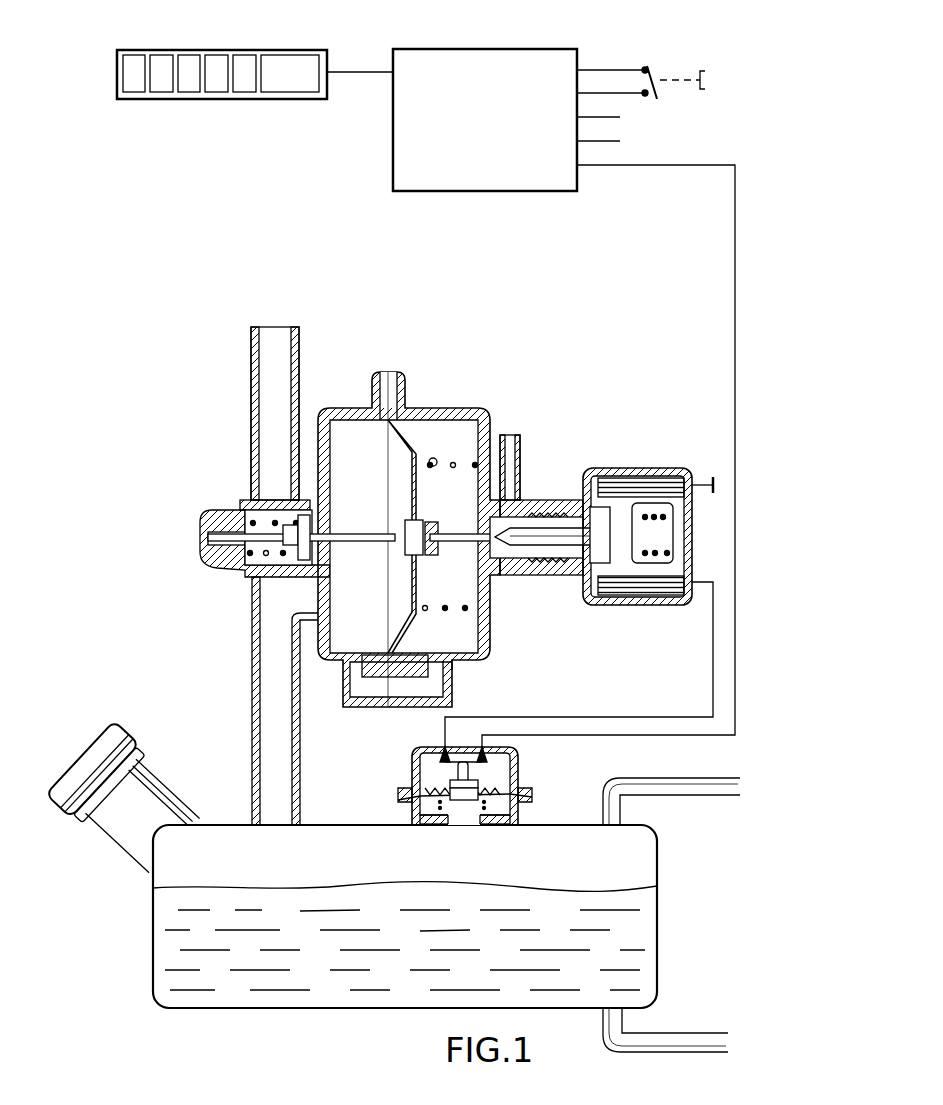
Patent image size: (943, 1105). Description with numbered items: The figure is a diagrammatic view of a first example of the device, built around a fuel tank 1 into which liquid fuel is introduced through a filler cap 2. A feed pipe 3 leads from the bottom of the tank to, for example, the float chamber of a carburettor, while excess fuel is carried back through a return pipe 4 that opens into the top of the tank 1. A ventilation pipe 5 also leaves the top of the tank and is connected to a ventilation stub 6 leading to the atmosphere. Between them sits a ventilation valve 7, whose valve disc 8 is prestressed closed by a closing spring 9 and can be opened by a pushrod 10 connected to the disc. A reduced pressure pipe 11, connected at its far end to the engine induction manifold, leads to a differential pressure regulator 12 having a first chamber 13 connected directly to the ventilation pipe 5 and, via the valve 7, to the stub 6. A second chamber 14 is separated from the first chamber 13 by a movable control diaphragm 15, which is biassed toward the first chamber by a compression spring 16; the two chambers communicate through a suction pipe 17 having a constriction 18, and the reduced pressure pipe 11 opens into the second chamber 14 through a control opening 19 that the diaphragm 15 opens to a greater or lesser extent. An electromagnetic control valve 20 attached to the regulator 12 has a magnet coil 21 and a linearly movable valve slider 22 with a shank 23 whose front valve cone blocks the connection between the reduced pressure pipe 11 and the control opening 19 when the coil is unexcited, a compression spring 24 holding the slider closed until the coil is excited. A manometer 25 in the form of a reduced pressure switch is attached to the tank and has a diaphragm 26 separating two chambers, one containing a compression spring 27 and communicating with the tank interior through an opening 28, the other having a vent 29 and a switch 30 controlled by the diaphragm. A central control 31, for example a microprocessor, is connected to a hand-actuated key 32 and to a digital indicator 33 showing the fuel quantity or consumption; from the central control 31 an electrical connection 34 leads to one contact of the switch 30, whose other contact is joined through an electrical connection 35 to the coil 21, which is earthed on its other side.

The fuel tank 1 is at (165, 945).
The filler cap 2 is at (117, 840).
The feed pipe 3 is at (690, 1040).
The return pipe 4 is at (688, 790).
The ventilation pipe 5 is at (270, 720).
The ventilation stub 6 is at (268, 352).
The ventilation valve 7 is at (190, 512).
The valve disc 8 is at (290, 526).
The closing spring 9 is at (270, 515).
The pushrod 10 is at (372, 535).
The reduced pressure pipe 11 is at (517, 437).
The differential pressure regulator 12 is at (452, 382).
The first chamber 13 is at (366, 445).
The second chamber 14 is at (452, 437).
The control diaphragm 15 is at (404, 430).
The compression spring 16 is at (436, 460).
The suction pipe 17 is at (355, 677).
The constriction 18 is at (465, 668).
The control opening 19 is at (497, 568).
The electromagnetic control valve 20 is at (640, 460).
The magnet coil 21 is at (640, 582).
The valve slider 22 is at (620, 478).
The shank 23 is at (540, 537).
The compression spring 24 is at (668, 476).
The manometer 25 is at (434, 791).
The diaphragm 26 is at (508, 790).
The compression spring 27 is at (420, 806).
The opening 28 is at (462, 822).
The vent 29 is at (413, 765).
The switch 30 is at (440, 748).
The central control 31 is at (484, 127).
The key 32 is at (672, 73).
The digital indicator 33 is at (210, 100).
The electrical connection 34 is at (733, 312).
The electrical connection 35 is at (713, 672).